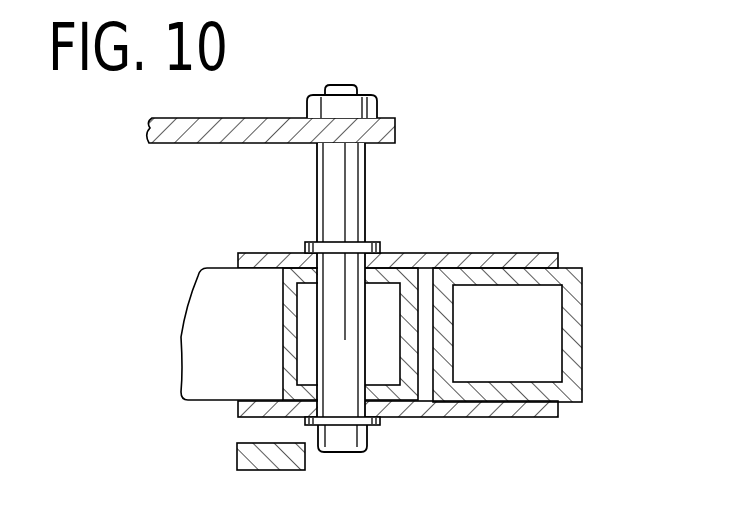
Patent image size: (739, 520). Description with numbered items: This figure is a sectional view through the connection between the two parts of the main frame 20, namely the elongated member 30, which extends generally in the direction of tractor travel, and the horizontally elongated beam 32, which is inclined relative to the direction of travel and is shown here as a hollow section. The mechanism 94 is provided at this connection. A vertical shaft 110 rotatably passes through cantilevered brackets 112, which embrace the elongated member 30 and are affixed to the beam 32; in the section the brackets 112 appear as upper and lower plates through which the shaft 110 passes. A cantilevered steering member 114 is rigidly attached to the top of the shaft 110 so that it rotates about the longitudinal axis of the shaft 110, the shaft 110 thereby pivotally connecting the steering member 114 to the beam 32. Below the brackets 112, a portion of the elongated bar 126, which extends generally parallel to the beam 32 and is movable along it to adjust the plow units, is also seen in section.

The main frame 20 is at (590, 260).
The elongated member 30 is at (281, 332).
The beam 32 is at (570, 325).
The mechanism 94 is at (388, 112).
The vertical shaft 110 is at (352, 197).
The cantilevered brackets 112 is at (445, 256).
The steering member 114 is at (208, 135).
The elongated bar 126 is at (300, 458).